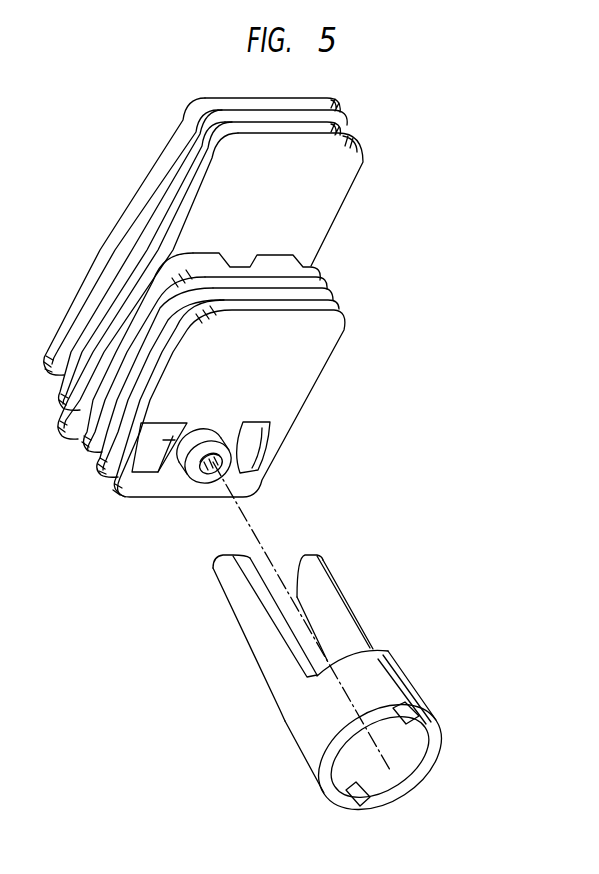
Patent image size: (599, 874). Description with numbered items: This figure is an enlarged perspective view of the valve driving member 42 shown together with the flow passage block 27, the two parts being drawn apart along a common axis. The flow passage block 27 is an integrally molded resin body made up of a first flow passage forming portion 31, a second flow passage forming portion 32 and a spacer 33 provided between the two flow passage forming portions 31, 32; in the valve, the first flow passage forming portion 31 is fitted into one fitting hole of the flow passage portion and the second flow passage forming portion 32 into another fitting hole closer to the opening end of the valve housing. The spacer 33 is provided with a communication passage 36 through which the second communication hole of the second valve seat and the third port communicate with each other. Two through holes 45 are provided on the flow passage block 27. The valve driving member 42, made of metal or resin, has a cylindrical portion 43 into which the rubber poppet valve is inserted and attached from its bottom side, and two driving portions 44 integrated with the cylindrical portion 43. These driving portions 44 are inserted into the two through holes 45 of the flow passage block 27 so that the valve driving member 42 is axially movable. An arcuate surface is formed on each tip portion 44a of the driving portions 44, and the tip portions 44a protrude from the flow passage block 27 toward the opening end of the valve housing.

The flow passage block 27 is at (185, 98).
The first flow passage forming portion 31 is at (318, 354).
The second flow passage forming portion 32 is at (352, 170).
The spacer 33 is at (143, 310).
The communication passage 36 is at (240, 257).
The through holes 45 is at (138, 458).
The valve driving member 42 is at (436, 693).
The cylindrical portion 43 is at (310, 737).
The driving portions 44 is at (275, 657).
The tip portions 44a is at (210, 561).